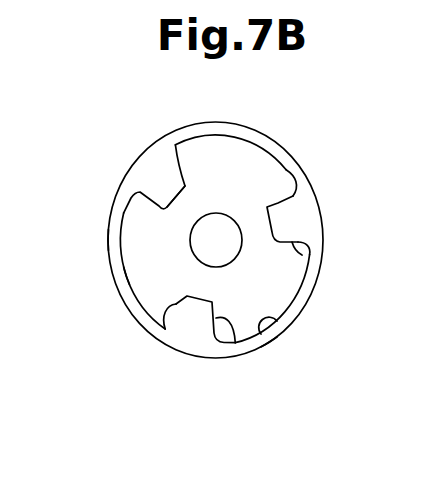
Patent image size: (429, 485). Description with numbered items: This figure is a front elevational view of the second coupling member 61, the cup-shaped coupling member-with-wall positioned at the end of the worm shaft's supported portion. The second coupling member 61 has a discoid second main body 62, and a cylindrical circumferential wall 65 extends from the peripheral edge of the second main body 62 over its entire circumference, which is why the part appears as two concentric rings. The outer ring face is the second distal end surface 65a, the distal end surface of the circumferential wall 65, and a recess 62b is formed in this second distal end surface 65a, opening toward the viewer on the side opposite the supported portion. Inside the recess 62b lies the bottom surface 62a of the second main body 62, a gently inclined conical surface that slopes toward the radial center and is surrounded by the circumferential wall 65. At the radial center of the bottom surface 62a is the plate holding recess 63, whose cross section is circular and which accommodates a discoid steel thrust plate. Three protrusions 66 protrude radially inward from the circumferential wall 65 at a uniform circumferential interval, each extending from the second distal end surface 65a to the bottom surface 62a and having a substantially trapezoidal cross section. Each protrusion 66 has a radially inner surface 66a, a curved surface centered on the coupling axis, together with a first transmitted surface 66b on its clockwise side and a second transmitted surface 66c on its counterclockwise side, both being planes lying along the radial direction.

The second coupling member 61 is at (274, 134).
The second main body 62 is at (292, 287).
The bottom surface 62a is at (137, 273).
The recess 62b is at (268, 343).
The plate holding recess 63 is at (218, 219).
The circumferential wall 65 is at (276, 329).
The second distal end surface 65a is at (113, 219).
The protrusion 66 is at (158, 177).
The inner surface 66a is at (175, 200).
The first transmitted surface 66b is at (312, 250).
The second transmitted surface 66c is at (291, 176).